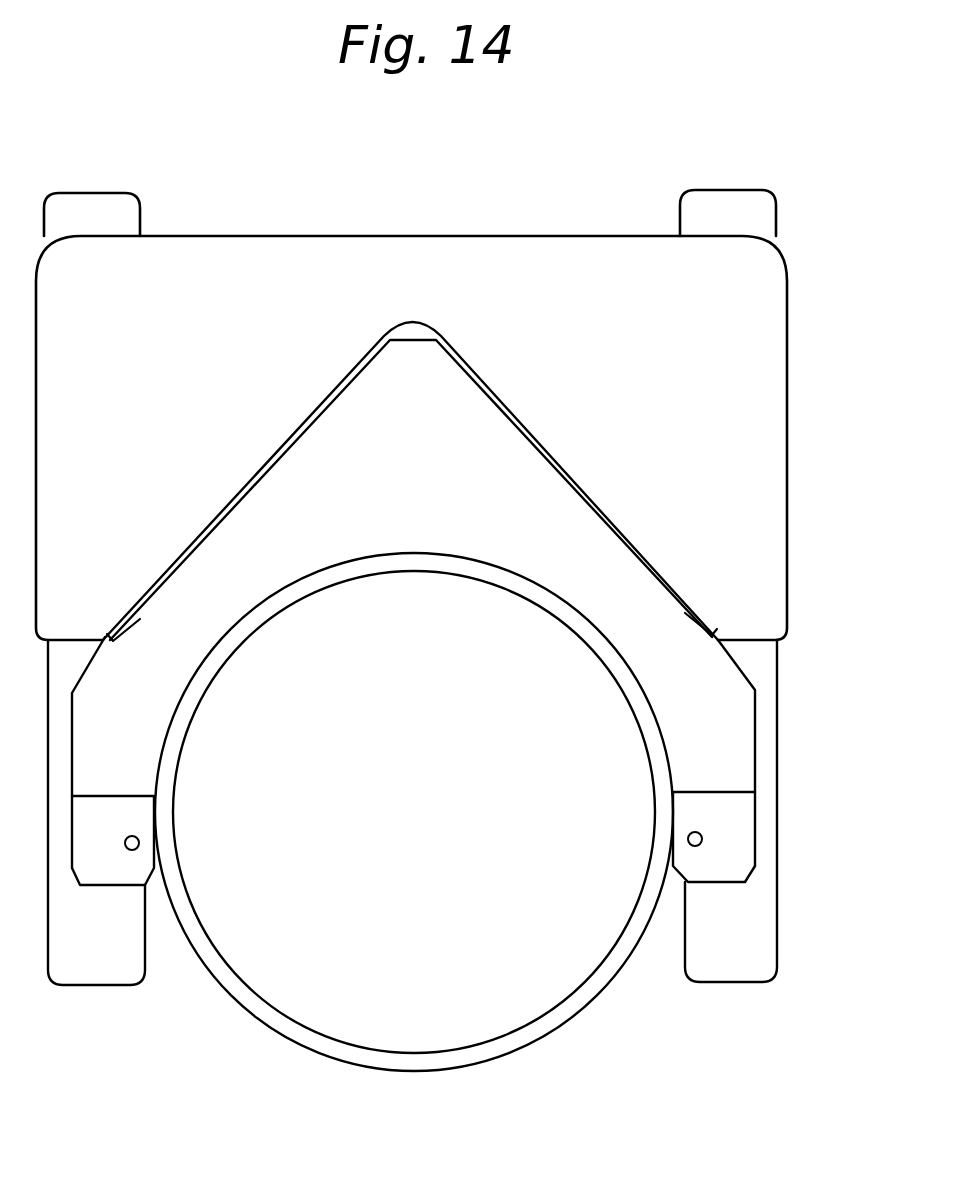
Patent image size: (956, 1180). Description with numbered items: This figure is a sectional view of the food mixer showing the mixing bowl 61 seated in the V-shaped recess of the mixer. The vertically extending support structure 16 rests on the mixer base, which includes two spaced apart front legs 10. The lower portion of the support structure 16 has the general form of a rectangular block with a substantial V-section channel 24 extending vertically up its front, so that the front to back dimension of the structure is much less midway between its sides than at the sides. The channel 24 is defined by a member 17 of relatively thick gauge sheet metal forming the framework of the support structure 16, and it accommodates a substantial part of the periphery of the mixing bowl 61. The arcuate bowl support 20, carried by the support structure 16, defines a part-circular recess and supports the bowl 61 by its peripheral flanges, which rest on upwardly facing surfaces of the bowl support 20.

The front legs 10 is at (106, 973).
The support structure 16 is at (497, 236).
The member 17 is at (617, 528).
The bowl support 20 is at (740, 846).
The V-section channel 24 is at (500, 472).
The mixing bowl 61 is at (440, 829).